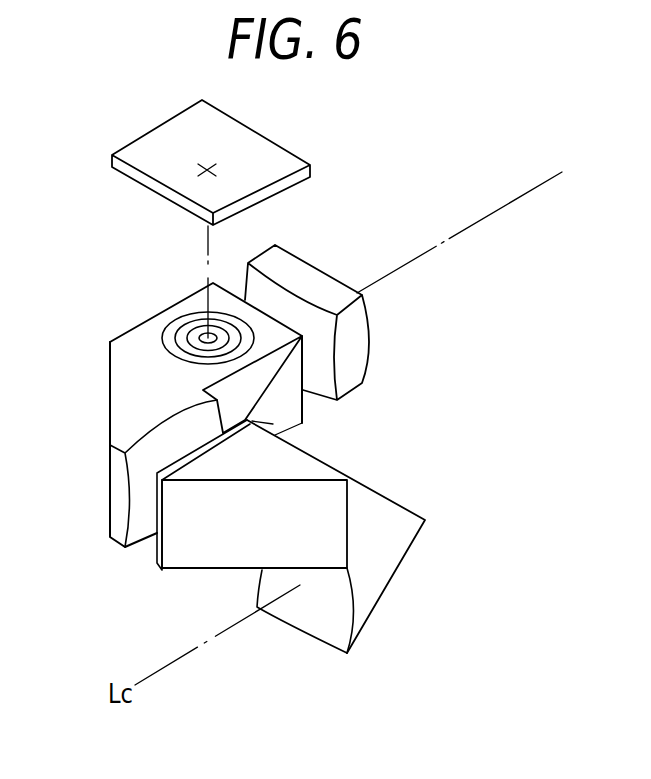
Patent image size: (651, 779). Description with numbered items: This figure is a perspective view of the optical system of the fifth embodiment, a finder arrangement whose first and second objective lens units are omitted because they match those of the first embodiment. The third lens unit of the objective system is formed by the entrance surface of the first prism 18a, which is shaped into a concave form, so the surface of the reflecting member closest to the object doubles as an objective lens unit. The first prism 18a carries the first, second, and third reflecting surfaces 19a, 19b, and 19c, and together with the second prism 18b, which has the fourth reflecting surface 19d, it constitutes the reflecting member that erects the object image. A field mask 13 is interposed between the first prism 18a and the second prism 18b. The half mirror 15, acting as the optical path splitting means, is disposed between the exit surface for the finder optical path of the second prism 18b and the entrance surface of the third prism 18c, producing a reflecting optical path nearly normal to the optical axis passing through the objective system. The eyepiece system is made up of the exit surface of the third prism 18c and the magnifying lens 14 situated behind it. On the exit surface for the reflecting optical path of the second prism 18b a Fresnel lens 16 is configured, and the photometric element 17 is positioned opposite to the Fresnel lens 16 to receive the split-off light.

The field mask 13 is at (173, 457).
The magnifying lens 14 is at (297, 267).
The half mirror 15 is at (295, 392).
The Fresnel lens 16 is at (175, 335).
The photometric element 17 is at (252, 142).
The first prism 18a is at (383, 507).
The second prism 18b is at (115, 483).
The third prism 18c is at (297, 390).
The first reflecting surface 19a is at (398, 600).
The second reflecting surface 19b is at (379, 477).
The third reflecting surface 19c is at (192, 563).
The fourth reflecting surface 19d is at (96, 386).